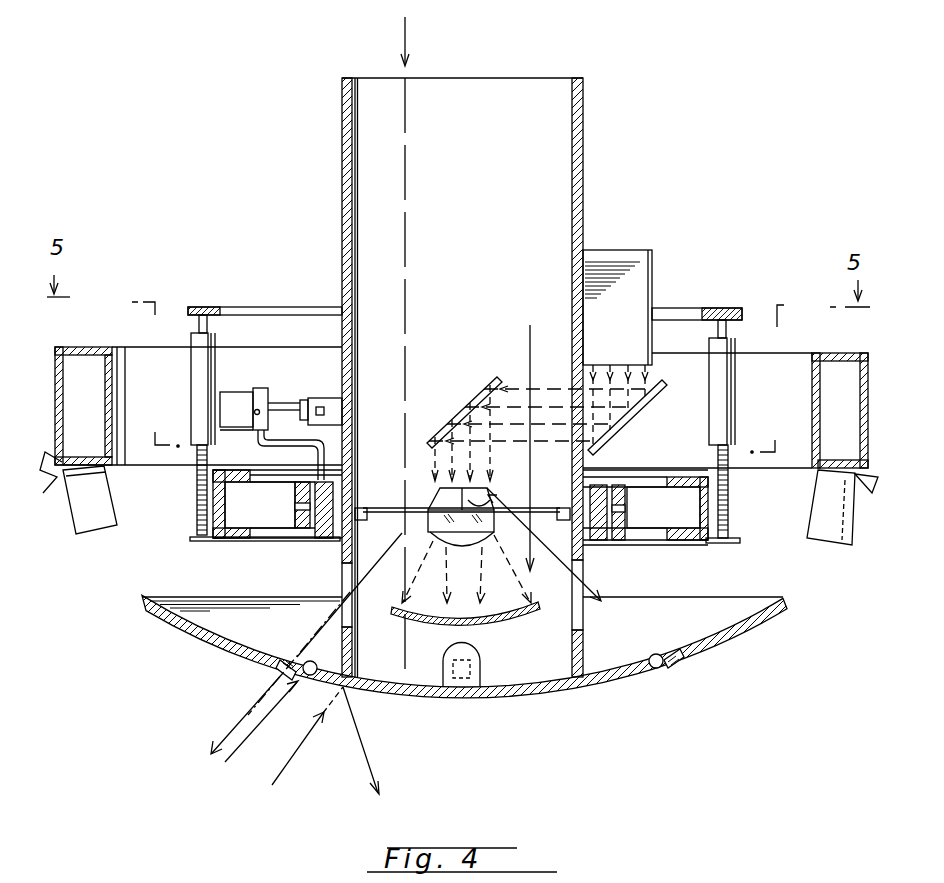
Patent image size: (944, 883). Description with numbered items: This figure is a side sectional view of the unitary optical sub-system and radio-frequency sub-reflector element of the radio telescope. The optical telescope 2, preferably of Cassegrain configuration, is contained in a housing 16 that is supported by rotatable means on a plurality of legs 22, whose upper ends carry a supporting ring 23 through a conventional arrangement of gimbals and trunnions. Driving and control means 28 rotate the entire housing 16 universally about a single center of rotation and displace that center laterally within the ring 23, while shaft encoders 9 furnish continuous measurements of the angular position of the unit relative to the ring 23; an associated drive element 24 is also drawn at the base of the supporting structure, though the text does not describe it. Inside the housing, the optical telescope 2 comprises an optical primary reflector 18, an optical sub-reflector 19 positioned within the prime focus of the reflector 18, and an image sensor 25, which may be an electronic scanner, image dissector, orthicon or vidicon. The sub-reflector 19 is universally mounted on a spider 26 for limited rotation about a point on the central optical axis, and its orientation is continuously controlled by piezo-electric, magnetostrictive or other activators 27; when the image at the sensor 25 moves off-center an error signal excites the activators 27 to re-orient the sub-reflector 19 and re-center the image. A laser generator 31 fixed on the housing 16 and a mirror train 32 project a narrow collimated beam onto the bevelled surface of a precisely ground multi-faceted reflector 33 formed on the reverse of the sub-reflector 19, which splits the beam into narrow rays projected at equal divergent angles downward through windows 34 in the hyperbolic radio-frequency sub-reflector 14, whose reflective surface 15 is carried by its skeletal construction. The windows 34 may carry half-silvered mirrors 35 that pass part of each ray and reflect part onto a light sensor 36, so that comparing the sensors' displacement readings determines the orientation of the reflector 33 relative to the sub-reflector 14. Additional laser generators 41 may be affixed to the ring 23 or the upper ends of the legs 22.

The optical telescope 2 is at (312, 172).
The housing 16 is at (342, 220).
The laser generator 31 is at (630, 335).
The mirror train 32 is at (478, 386).
The spider 26 is at (380, 507).
The activators 27 is at (402, 533).
The multi-faceted reflector 33 is at (488, 500).
The optical sub-reflector 19 is at (452, 548).
The optical primary reflector 18 is at (512, 612).
The image sensor 25 is at (472, 670).
The radio-frequency sub-reflector 14 is at (642, 678).
The reflective surface 15 is at (586, 688).
The windows 34 is at (278, 668).
The half-silvered mirrors 35 is at (290, 661).
The light sensor 36 is at (307, 675).
The supporting ring 23 is at (795, 360).
The driving and control means 28 is at (208, 370).
The shaft encoders 9 is at (270, 402).
The drive mechanism 24 is at (318, 541).
The additional laser generators 41 is at (86, 534).
The legs 22 is at (46, 495).